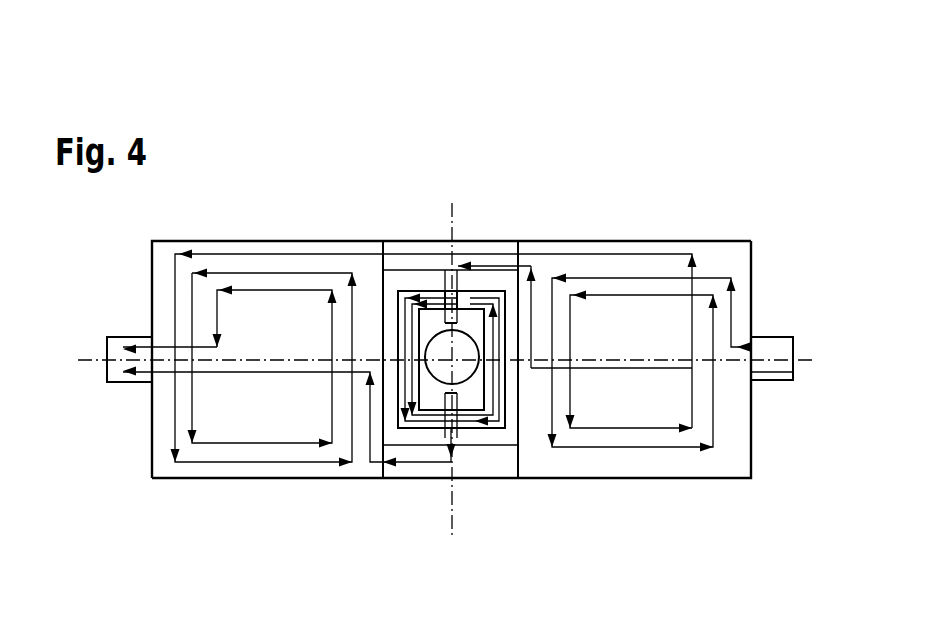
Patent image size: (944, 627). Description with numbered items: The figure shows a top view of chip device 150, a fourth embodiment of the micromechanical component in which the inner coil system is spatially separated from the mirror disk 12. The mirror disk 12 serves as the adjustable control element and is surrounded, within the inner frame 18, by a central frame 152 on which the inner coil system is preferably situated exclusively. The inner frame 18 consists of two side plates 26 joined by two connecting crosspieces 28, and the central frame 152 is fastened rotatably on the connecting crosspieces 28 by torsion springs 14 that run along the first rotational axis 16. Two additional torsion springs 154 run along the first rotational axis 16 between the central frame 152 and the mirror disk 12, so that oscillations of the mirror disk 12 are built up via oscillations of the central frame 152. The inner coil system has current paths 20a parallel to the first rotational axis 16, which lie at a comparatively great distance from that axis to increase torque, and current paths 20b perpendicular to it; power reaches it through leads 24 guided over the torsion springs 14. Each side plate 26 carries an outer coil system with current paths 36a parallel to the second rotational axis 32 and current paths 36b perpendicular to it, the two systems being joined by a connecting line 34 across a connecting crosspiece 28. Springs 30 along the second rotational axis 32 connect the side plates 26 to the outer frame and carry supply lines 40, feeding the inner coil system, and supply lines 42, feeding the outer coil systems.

The chip device 150 is at (742, 194).
The side plate 26 is at (733, 457).
The connecting crosspiece 28 is at (393, 248).
The inner frame 18 is at (512, 460).
The first rotational axis 16 is at (456, 521).
The second rotational axis 32 is at (803, 360).
The spring 30 is at (125, 378).
The supply line 42 is at (775, 345).
The supply line 40 is at (767, 373).
The current path 36a is at (267, 273).
The current path 36b is at (332, 405).
The torsion spring 14 is at (463, 297).
The current path 20b is at (440, 300).
The current path 20a is at (410, 348).
The central frame 152 is at (497, 300).
The lead 24 is at (445, 290).
The connecting line 34 is at (458, 288).
The additional torsion spring 154 is at (443, 323).
The mirror disk 12 is at (465, 369).